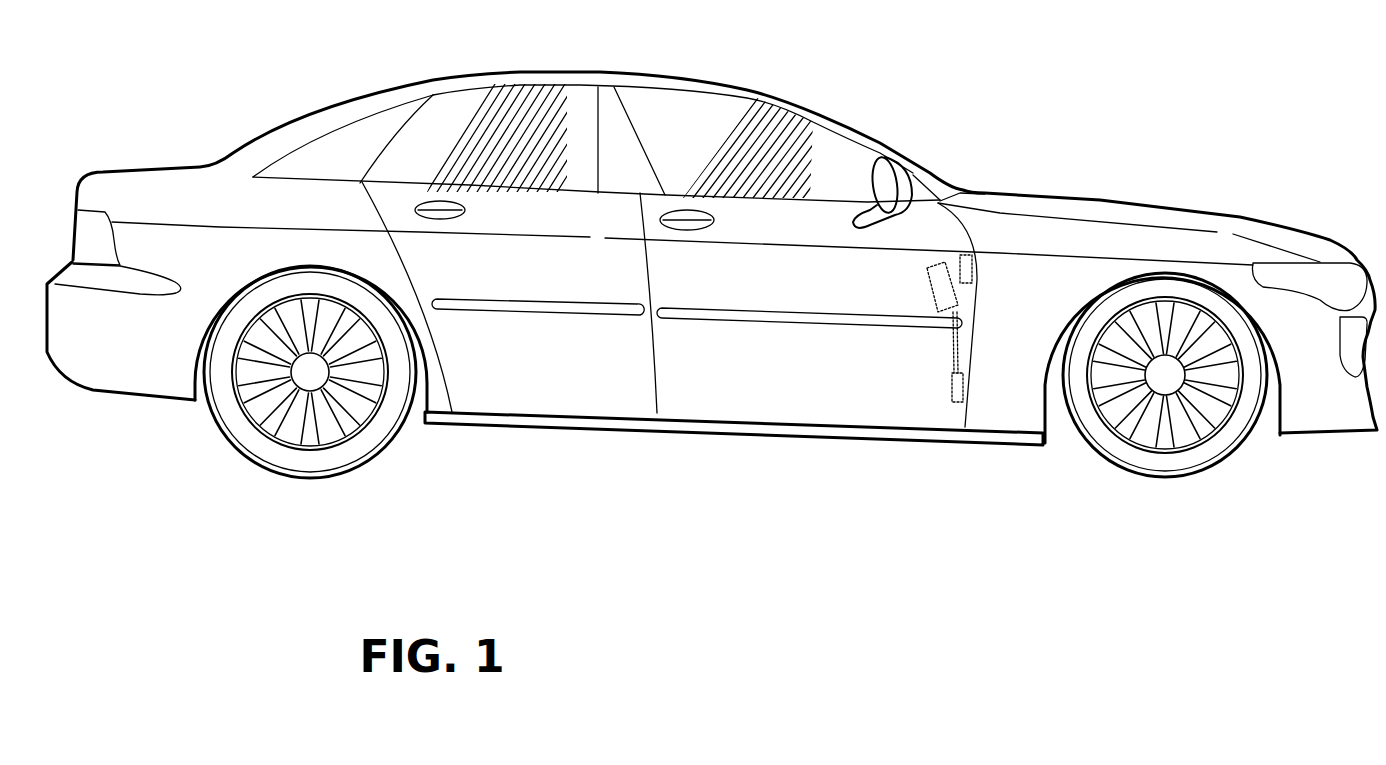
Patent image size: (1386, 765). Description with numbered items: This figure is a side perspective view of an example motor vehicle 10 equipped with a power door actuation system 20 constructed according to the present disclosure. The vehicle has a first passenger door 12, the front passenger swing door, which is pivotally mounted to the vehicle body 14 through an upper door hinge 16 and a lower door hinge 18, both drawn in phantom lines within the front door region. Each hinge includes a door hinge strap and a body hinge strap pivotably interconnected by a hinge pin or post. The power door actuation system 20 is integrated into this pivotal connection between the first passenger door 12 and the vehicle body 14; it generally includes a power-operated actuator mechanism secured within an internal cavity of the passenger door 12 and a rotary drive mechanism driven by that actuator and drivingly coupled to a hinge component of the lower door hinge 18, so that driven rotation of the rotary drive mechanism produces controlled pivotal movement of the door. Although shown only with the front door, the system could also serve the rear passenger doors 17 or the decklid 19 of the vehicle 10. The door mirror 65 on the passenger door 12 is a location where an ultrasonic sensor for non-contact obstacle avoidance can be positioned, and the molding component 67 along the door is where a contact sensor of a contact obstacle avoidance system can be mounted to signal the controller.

The motor vehicle 10 is at (963, 153).
The first passenger door 12 is at (752, 398).
The vehicle body 14 is at (1002, 215).
The upper door hinge 16 is at (975, 272).
The rear passenger doors 17 is at (505, 398).
The lower door hinge 18 is at (967, 392).
The decklid 19 is at (140, 183).
The power door actuation system 20 is at (908, 273).
The door mirror 65 is at (903, 173).
The molding component 67 is at (840, 320).